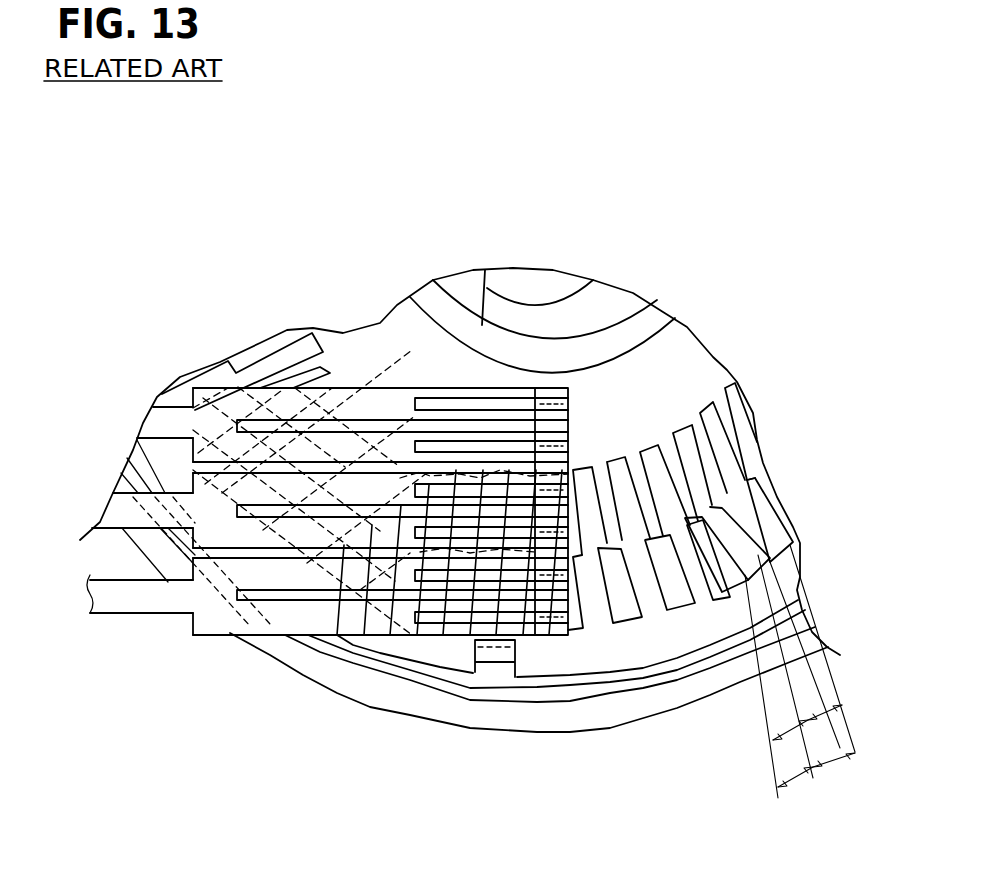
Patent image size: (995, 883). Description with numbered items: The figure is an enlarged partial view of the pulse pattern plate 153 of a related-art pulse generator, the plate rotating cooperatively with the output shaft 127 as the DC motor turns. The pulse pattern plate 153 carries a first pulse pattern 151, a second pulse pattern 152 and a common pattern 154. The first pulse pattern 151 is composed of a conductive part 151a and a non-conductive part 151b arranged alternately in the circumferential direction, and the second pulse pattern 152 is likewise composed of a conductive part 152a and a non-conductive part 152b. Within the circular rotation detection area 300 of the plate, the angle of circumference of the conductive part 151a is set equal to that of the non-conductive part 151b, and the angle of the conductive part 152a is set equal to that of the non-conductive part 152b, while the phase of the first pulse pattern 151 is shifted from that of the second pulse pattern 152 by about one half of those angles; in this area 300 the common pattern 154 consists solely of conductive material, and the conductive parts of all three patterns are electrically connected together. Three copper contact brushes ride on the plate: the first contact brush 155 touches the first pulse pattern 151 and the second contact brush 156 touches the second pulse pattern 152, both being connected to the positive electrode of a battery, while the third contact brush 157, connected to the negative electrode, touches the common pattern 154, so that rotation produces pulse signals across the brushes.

The output shaft 127 is at (533, 290).
The first pulse pattern 151 is at (770, 573).
The conductive part 151a is at (638, 522).
The non-conductive part 151b is at (660, 540).
The second pulse pattern 152 is at (664, 430).
The conductive part 152a is at (613, 527).
The non-conductive part 152b is at (693, 540).
The pulse pattern plate 153 is at (547, 645).
The common pattern 154 is at (703, 377).
The first contact brush 155 is at (148, 603).
The second contact brush 156 is at (112, 519).
The third contact brush 157 is at (160, 423).
The rotation detection area 300 is at (338, 693).